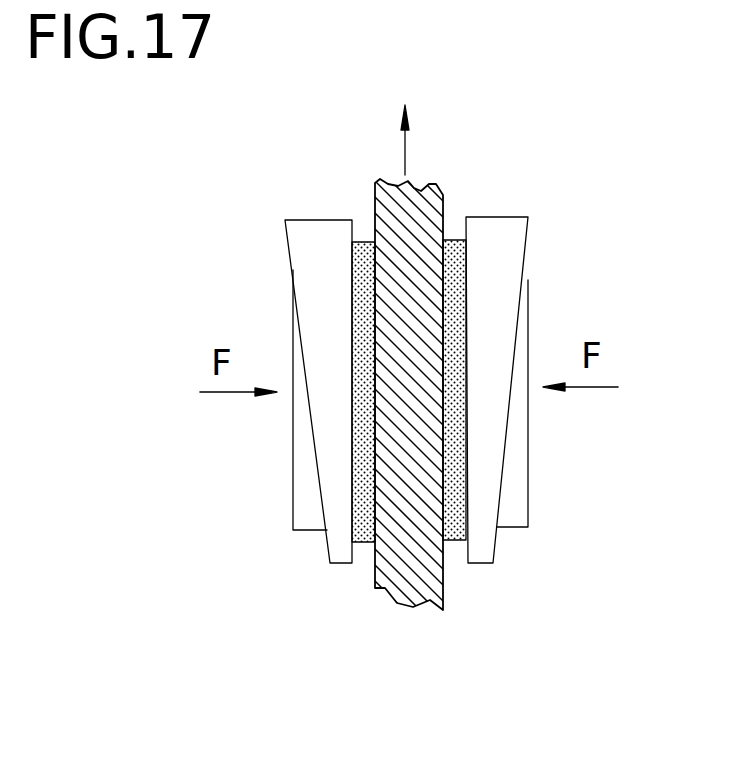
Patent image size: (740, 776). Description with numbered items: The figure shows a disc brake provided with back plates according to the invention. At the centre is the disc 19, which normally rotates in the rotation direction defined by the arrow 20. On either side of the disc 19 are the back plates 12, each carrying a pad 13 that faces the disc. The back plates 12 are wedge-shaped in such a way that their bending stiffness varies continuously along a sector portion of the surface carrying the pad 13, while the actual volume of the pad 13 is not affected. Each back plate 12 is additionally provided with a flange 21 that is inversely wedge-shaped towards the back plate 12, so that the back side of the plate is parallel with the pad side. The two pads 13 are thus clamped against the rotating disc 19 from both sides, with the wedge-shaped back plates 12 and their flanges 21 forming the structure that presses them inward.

The back plate 12 is at (285, 222).
The pad 13 is at (362, 250).
The disc 19 is at (393, 218).
The arrow 20 is at (405, 158).
The flange 21 is at (293, 440).